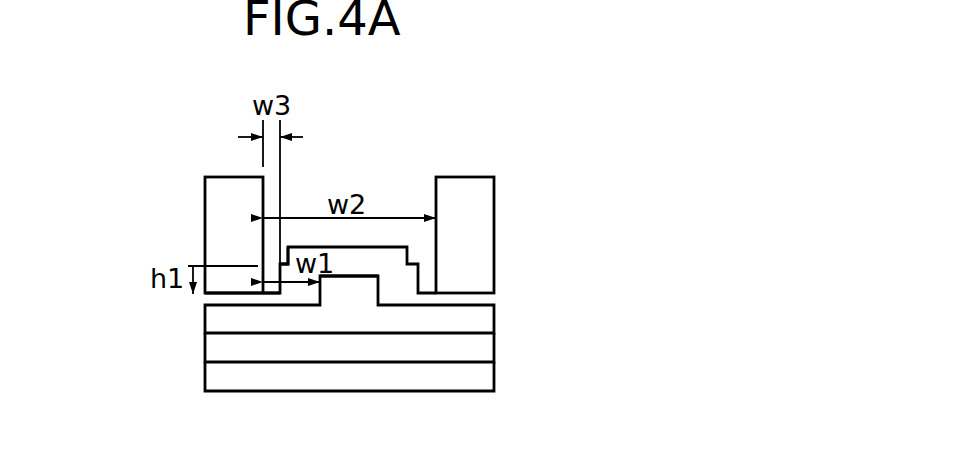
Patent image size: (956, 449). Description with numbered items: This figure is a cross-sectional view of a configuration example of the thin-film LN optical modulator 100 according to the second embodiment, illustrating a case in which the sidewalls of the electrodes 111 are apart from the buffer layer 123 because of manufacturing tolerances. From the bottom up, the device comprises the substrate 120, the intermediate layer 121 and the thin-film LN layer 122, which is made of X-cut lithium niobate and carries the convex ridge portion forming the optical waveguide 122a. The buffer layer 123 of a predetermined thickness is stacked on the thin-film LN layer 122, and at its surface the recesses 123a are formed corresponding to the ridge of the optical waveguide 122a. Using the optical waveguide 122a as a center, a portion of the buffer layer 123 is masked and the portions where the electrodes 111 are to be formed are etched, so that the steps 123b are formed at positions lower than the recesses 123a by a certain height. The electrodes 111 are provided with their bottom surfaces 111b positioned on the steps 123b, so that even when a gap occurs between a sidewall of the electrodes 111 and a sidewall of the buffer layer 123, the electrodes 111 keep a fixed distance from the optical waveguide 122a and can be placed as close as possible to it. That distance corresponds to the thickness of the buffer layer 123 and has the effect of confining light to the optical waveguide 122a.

The thin-film LN optical modulator 100 is at (517, 138).
The electrodes 111 is at (214, 209).
The bottom surfaces of the electrodes 111b is at (233, 297).
The substrate 120 is at (480, 385).
The intermediate layer 121 is at (480, 355).
The thin-film LN layer 122 is at (480, 322).
The optical waveguide 122a is at (361, 276).
The buffer layer 123 is at (405, 283).
The recesses 123a is at (288, 250).
The steps 123b is at (199, 331).